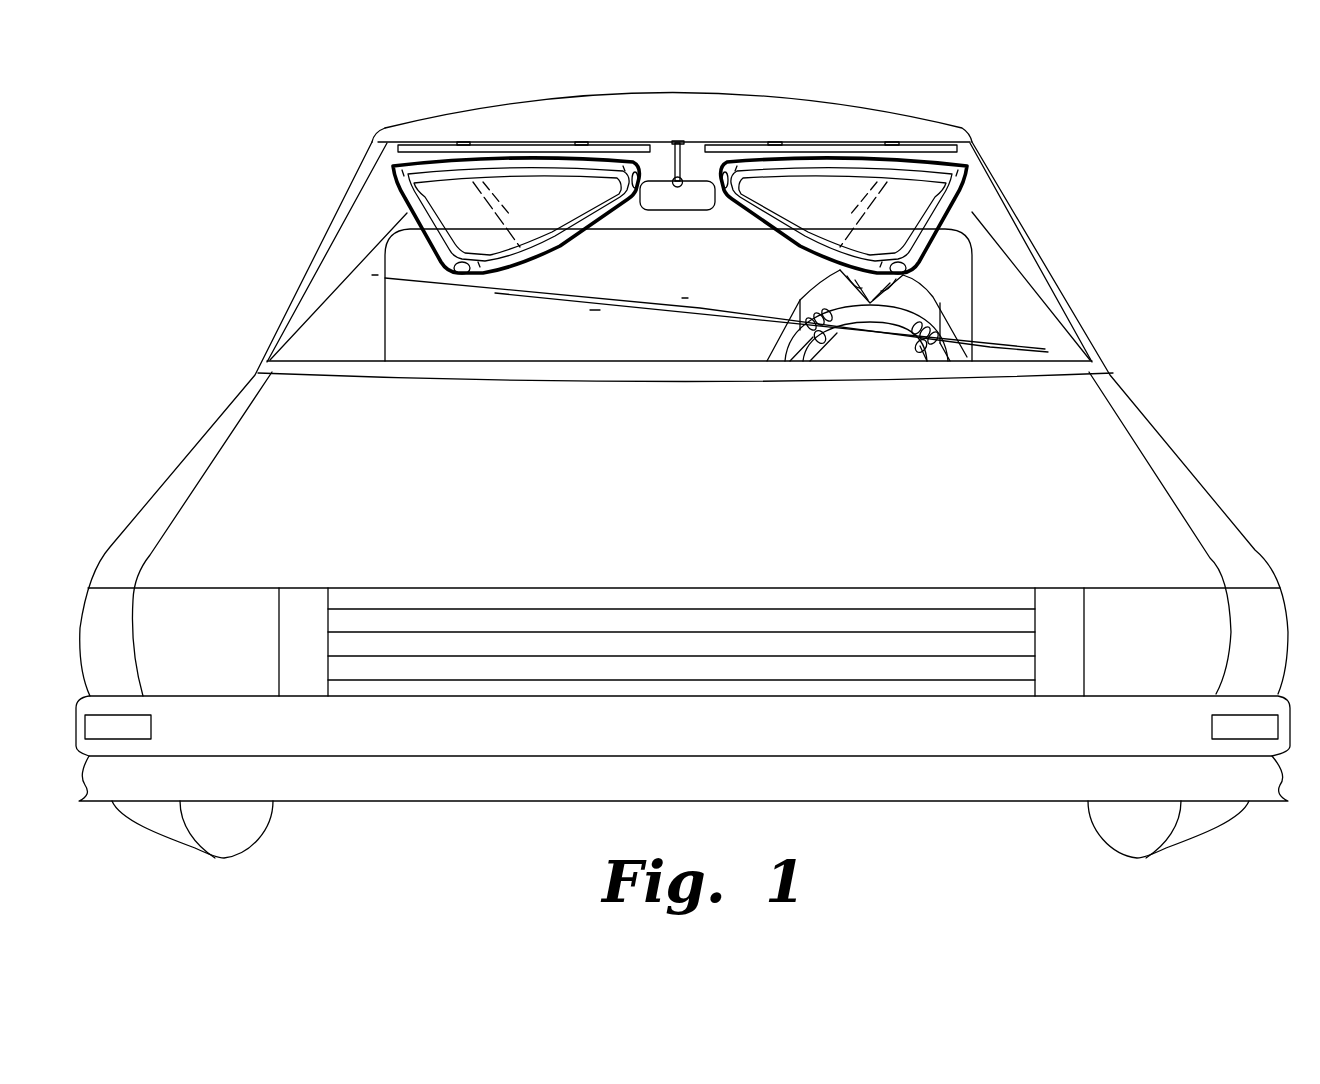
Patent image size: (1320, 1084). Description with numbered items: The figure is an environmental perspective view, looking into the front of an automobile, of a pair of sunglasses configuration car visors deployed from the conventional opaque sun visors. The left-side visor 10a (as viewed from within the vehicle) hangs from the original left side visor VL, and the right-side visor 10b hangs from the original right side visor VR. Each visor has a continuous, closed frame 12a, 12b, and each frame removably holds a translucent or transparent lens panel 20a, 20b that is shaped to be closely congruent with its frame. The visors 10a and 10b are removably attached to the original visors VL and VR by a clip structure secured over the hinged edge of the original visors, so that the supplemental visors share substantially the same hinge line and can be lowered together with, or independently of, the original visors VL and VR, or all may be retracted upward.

The sunglasses configuration car visor 10a is at (906, 231).
The sunglasses configuration car visor 10b is at (460, 218).
The frame 12a is at (778, 243).
The frame 12b is at (590, 240).
The lens panel 20a is at (912, 212).
The lens panel 20b is at (585, 214).
The right side visor VR is at (424, 149).
The left side visor VL is at (940, 149).